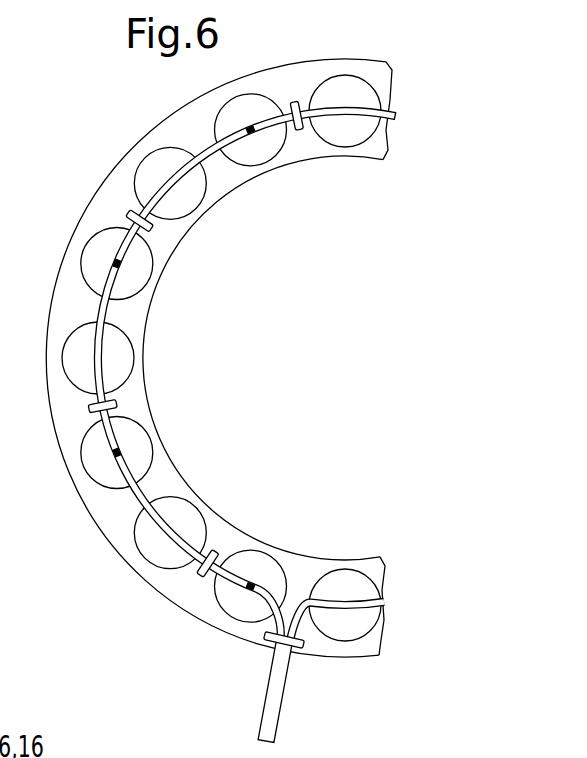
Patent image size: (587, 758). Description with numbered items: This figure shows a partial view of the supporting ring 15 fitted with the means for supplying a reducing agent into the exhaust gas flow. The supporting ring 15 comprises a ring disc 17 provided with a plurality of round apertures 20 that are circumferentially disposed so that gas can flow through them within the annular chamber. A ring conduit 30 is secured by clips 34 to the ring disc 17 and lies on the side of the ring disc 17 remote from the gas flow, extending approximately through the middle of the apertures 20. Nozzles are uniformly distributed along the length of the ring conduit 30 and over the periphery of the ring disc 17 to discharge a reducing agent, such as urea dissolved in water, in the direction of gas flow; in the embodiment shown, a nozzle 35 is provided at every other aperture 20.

The supporting ring 15 is at (199, 402).
The ring disc 17 is at (138, 306).
The round apertures 20 is at (97, 428).
The ring conduit 30 is at (140, 489).
The clips 34 is at (297, 128).
The nozzle 35 is at (249, 133).